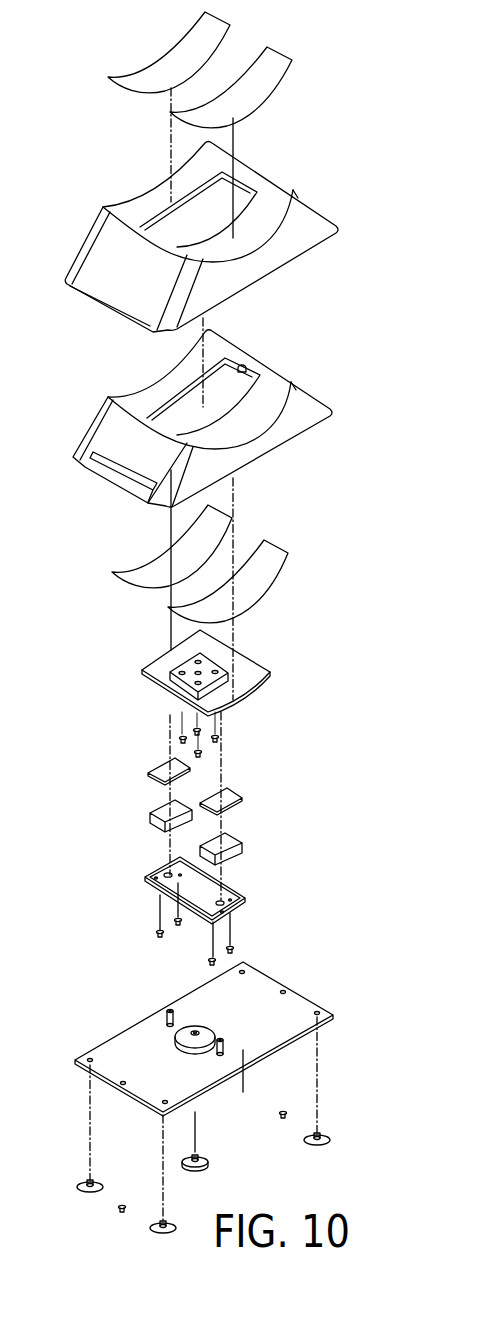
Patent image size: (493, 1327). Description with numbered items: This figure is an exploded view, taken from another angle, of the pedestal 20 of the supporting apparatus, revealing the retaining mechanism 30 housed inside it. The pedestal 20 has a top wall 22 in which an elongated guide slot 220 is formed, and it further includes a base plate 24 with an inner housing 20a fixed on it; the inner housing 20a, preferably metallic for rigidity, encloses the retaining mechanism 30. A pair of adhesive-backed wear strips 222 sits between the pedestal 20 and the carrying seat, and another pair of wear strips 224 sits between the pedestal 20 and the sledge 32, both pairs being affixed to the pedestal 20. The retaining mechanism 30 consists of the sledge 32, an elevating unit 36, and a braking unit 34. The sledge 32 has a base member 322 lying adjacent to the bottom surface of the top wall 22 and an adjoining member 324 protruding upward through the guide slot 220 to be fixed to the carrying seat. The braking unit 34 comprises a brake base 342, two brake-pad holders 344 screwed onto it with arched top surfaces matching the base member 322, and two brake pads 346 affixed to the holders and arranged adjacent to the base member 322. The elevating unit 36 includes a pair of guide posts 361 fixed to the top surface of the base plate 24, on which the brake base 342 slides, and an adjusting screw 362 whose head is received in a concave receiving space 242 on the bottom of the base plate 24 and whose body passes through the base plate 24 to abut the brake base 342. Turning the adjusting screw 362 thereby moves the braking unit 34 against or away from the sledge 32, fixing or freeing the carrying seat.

The pedestal 20 is at (184, 232).
The inner housing 20a is at (85, 418).
The top wall 22 is at (248, 232).
The guide slot 220 is at (242, 192).
The wear strips 222 is at (150, 86).
The wear strips 224 is at (277, 547).
The base plate 24 is at (140, 1027).
The receiving space 242 is at (182, 1043).
The retaining mechanism 30 is at (322, 758).
The sledge 32 is at (210, 689).
The base member 322 is at (152, 685).
The adjoining member 324 is at (192, 660).
The braking unit 34 is at (189, 841).
The brake base 342 is at (145, 877).
The brake-pad holders 344 is at (150, 822).
The brake pads 346 is at (153, 767).
The elevating unit 36 is at (223, 1084).
The guide posts 361 is at (167, 1017).
The adjusting screw 362 is at (205, 1160).